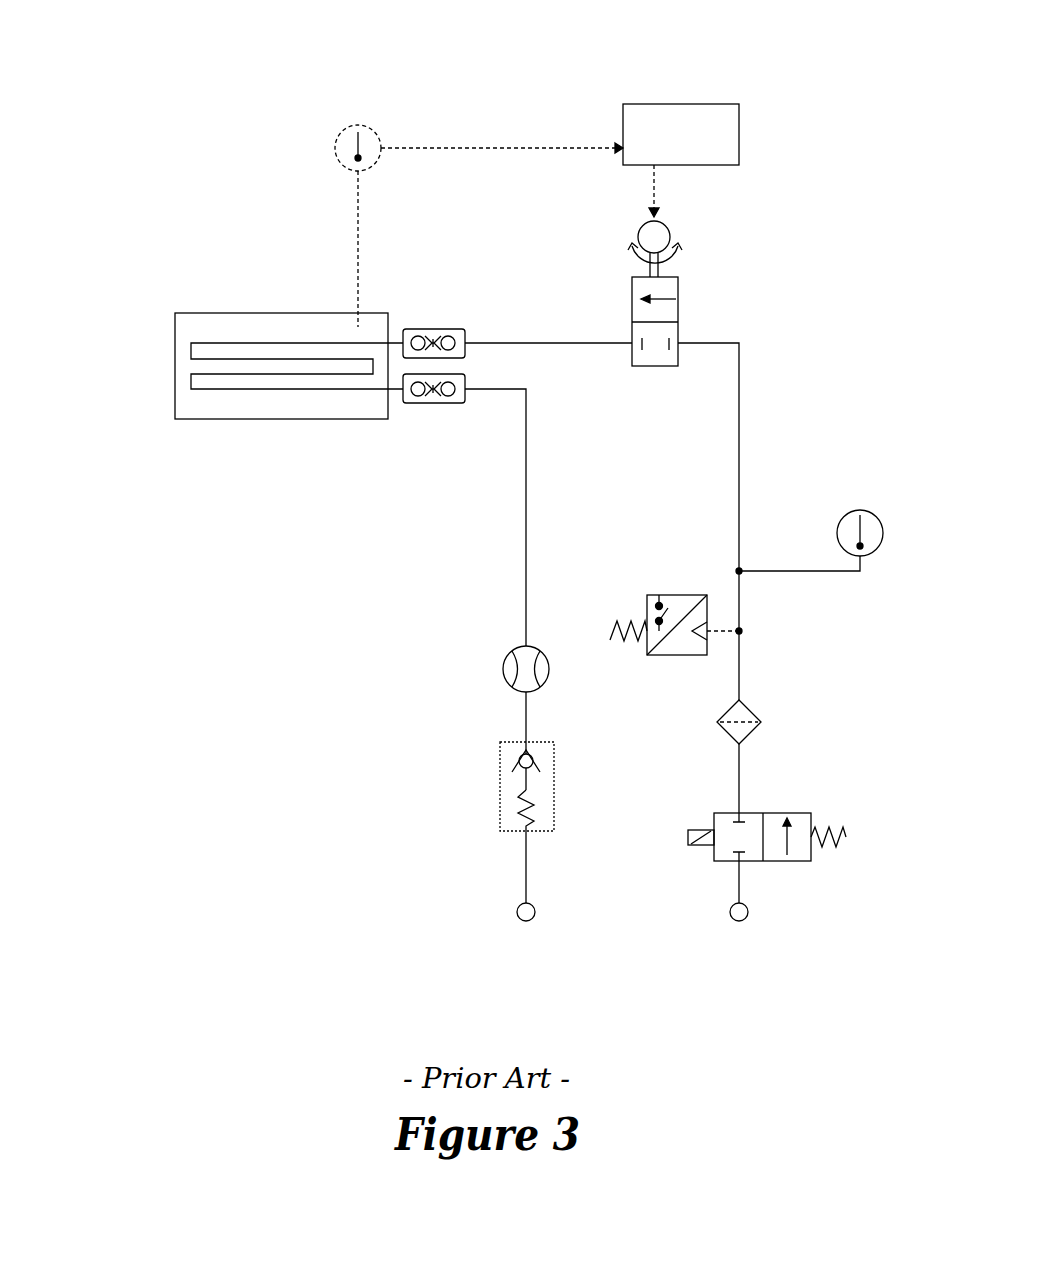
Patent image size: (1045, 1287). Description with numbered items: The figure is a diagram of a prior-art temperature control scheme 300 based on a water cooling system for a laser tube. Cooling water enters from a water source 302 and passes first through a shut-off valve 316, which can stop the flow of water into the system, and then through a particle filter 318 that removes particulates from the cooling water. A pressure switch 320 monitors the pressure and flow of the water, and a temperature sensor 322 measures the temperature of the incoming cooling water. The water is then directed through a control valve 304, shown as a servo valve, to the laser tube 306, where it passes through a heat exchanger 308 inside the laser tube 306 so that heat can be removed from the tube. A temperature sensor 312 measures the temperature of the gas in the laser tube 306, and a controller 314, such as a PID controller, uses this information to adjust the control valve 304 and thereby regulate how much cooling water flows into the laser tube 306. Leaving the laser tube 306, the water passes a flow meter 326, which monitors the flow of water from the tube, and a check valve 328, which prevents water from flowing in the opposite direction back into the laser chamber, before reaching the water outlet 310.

The temperature control scheme 300 is at (155, 96).
The water source 302 is at (737, 923).
The control valve 304 is at (680, 292).
The laser tube 306 is at (292, 312).
The heat exchanger 308 is at (220, 343).
The water outlet 310 is at (523, 925).
The temperature sensor 312 is at (350, 126).
The controller 314 is at (660, 103).
The shut-off valve 316 is at (775, 858).
The particle filter 318 is at (753, 709).
The pressure switch 320 is at (680, 593).
The temperature sensor 322 is at (863, 510).
The flow meter 326 is at (505, 665).
The check valve 328 is at (498, 772).